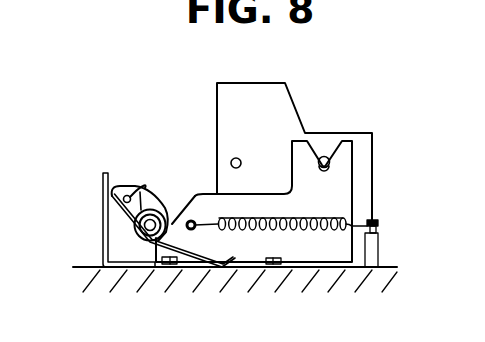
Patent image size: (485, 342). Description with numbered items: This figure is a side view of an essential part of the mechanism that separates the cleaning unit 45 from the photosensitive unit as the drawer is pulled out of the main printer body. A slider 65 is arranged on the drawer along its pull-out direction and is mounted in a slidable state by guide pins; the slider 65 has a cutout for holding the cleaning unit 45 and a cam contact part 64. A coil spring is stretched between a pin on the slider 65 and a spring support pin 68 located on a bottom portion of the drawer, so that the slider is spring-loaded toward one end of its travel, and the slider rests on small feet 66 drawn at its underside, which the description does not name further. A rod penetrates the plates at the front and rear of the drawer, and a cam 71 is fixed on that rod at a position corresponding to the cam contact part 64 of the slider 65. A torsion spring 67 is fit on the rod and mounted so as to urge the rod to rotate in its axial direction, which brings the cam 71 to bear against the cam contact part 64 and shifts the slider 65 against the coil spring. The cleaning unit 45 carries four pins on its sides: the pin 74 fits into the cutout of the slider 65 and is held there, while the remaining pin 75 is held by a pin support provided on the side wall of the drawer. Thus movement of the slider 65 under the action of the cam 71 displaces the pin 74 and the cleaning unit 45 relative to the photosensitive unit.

The cleaning unit 45 is at (274, 132).
The cam contact part 64 is at (102, 197).
The slider 65 is at (287, 176).
The feet 66 is at (170, 272).
The torsion spring 67 is at (213, 270).
The spring support pin 68 is at (372, 249).
The cam 71 is at (128, 192).
The pin 74 is at (325, 157).
The pin 75 is at (231, 161).